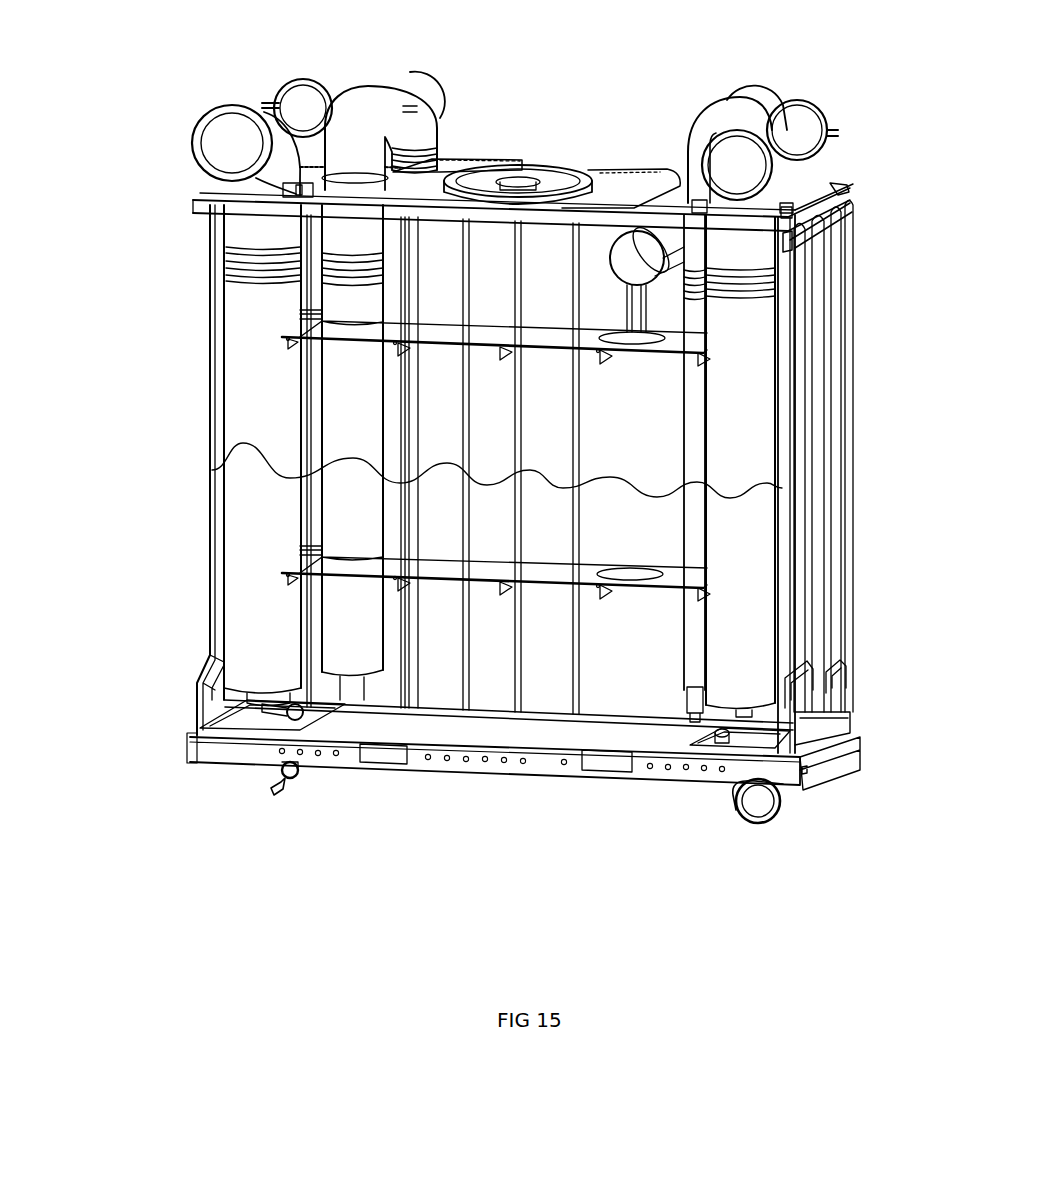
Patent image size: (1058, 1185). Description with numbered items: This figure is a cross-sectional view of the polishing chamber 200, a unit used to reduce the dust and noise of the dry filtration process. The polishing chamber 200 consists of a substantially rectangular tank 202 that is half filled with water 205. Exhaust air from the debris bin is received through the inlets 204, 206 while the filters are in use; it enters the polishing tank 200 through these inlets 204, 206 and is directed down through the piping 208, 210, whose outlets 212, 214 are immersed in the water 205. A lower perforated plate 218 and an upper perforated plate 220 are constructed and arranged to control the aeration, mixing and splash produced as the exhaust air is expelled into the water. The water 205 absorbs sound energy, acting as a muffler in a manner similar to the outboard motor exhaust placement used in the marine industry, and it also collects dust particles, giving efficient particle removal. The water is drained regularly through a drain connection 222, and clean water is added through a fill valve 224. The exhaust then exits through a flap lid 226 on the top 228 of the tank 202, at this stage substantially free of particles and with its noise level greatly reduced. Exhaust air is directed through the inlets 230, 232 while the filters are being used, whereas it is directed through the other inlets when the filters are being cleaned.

The polishing chamber 200 is at (868, 575).
The tank 202 is at (630, 756).
The inlet 204 is at (415, 135).
The water 205 is at (703, 483).
The inlet 206 is at (714, 112).
The piping 208 is at (347, 667).
The piping 210 is at (697, 668).
The outlet 212 is at (370, 675).
The outlet 214 is at (690, 716).
The lower perforated plate 218 is at (470, 585).
The upper perforated plate 220 is at (567, 335).
The drain connection 222 is at (765, 826).
The fill valve 224 is at (273, 788).
The flap lid 226 is at (538, 178).
The top 228 is at (837, 186).
The inlet 230 is at (233, 136).
The inlet 232 is at (793, 230).